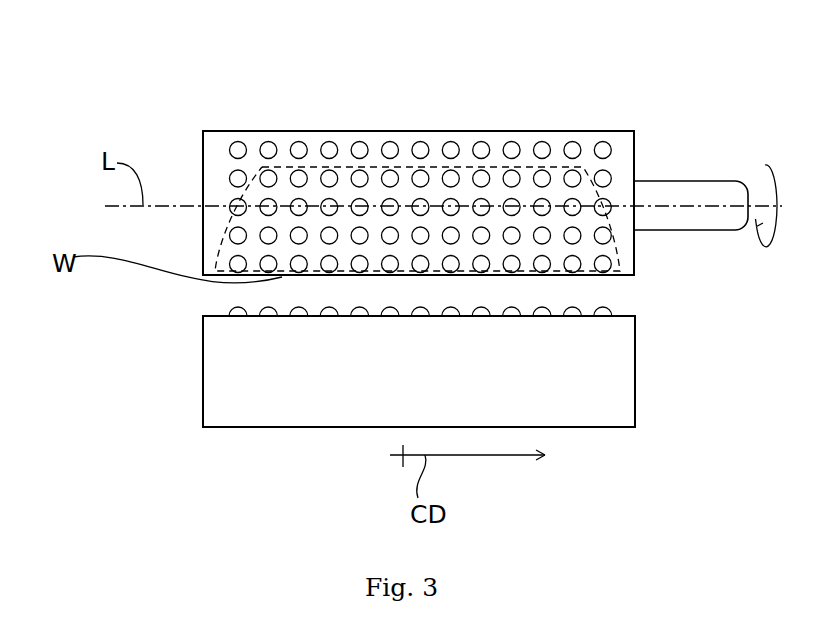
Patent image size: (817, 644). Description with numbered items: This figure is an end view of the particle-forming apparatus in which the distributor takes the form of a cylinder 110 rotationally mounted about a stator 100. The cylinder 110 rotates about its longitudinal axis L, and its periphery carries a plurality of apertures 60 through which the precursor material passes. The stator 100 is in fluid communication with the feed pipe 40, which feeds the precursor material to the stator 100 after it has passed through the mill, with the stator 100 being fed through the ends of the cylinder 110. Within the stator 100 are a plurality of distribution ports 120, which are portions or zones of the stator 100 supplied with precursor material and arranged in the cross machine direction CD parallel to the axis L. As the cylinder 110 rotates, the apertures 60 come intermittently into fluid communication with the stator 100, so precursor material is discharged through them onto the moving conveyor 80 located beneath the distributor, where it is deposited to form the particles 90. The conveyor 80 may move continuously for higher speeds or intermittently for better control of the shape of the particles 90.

The feed pipe 40 is at (695, 190).
The apertures 60 is at (302, 141).
The conveyor 80 is at (586, 391).
The particles 90 is at (237, 307).
The stator 100 is at (490, 153).
The cylinder 110 is at (588, 142).
The distribution ports 120 is at (252, 163).